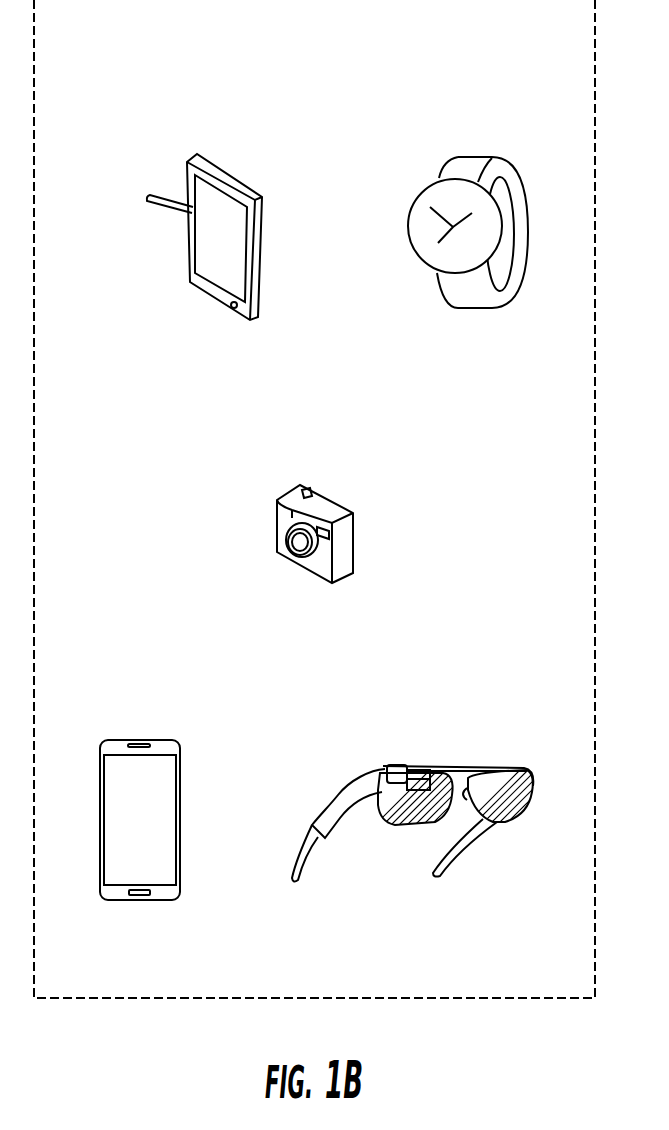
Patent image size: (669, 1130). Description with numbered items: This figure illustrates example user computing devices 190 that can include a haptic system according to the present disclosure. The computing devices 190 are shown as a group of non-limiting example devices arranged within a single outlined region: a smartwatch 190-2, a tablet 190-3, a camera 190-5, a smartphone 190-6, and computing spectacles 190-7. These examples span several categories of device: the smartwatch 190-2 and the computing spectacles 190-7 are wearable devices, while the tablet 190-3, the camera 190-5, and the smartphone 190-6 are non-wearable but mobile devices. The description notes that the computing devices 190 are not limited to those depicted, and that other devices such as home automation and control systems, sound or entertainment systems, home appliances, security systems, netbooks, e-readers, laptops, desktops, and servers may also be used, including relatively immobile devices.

The computing devices 190 is at (458, 39).
The smartwatch 190-2 is at (478, 155).
The tablet 190-3 is at (242, 180).
The camera 190-5 is at (332, 500).
The smartphone 190-6 is at (178, 740).
The computing spectacles 190-7 is at (460, 767).